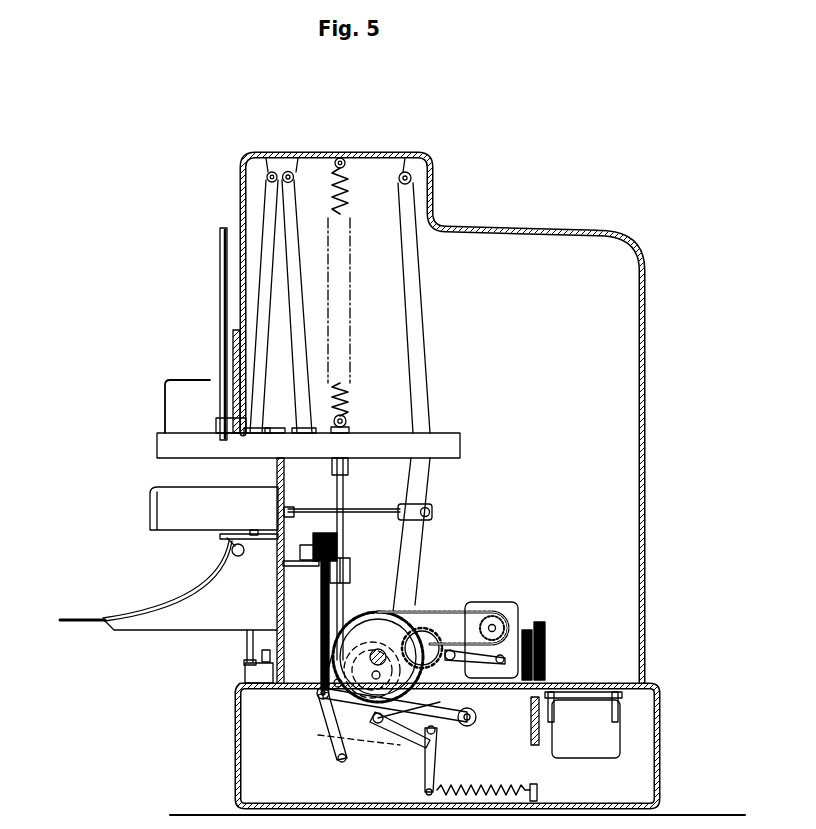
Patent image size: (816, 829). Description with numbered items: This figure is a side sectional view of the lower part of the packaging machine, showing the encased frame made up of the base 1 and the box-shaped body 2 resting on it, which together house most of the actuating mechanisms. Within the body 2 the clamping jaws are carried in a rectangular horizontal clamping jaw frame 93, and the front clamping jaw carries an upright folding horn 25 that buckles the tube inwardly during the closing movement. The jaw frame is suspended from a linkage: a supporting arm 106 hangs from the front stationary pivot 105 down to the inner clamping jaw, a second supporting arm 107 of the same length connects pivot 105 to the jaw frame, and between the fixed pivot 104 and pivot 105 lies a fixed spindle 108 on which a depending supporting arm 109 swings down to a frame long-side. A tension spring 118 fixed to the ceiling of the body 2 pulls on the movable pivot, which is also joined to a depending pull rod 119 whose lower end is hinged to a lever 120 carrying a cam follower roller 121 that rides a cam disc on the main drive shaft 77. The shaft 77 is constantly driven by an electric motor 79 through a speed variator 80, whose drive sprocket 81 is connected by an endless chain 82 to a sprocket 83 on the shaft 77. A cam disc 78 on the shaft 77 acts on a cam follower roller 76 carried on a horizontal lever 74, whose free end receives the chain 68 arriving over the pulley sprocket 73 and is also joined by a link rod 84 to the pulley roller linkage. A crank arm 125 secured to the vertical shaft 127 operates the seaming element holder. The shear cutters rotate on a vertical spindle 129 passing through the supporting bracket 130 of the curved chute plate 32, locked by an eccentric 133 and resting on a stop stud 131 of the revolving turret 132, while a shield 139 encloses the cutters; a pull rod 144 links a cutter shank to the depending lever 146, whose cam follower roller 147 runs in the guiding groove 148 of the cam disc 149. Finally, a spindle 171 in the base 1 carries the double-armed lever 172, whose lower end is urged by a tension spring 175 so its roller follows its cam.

The base 1 is at (660, 740).
The box-shaped body 2 is at (646, 308).
The folding horn 25 is at (165, 405).
The curved plate 32 is at (86, 618).
The chain 68 is at (322, 612).
The pulley sprocket 73 is at (313, 545).
The horizontal lever 74 is at (328, 701).
The cam follower roller 76 is at (334, 680).
The main drive shaft 77 is at (402, 610).
The cam disc 78 is at (378, 618).
The electric motor 79 is at (590, 745).
The speed variator 80 is at (495, 606).
The drive sprocket 81 is at (500, 625).
The endless chain 82 is at (440, 612).
The sprocket 83 is at (416, 655).
The link rod 84 is at (327, 660).
The clamping jaw frame 93 is at (363, 448).
The fixed pivot 104 is at (408, 172).
The front stationary pivot 105 is at (272, 171).
The supporting arm 106 is at (268, 238).
The second supporting arm 107 is at (413, 306).
The fixed spindle 108 is at (291, 171).
The supporting arm 109 is at (290, 253).
The tension spring 118 is at (343, 398).
The pull rod 119 is at (344, 548).
The lever 120 is at (373, 762).
The cam follower roller 121 is at (350, 745).
The crank arm 125 is at (268, 432).
The vertical shaft 127 is at (220, 273).
The vertical spindle 129 is at (245, 645).
The supporting bracket 130 is at (170, 630).
The stop stud 131 is at (258, 662).
The turret 132 is at (252, 678).
The eccentric 133 is at (232, 551).
The shield 139 is at (150, 515).
The pull rod 144 is at (336, 512).
The depending lever 146 is at (413, 542).
The cam follower roller 147 is at (476, 714).
The guiding groove 148 is at (330, 638).
The cam disc 149 is at (345, 729).
The spindle 171 is at (430, 760).
The double-armed lever 172 is at (437, 768).
The tension spring 175 is at (482, 788).